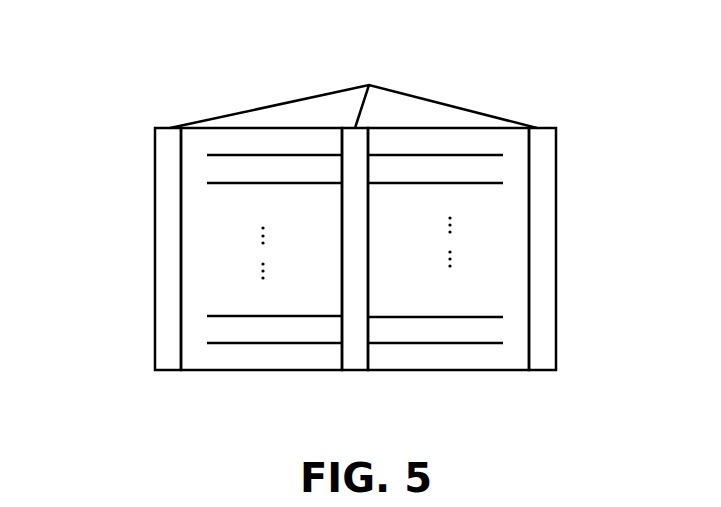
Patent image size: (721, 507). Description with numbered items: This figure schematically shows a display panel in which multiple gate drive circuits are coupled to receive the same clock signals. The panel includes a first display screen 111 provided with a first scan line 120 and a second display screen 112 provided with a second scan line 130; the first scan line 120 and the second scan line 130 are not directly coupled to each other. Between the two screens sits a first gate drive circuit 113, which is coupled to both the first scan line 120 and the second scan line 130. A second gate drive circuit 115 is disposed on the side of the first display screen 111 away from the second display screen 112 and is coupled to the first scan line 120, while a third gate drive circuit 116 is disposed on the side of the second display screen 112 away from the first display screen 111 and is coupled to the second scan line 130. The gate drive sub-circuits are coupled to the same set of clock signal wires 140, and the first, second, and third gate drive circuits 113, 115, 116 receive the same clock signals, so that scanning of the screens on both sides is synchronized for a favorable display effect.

The first display screen 111 is at (183, 249).
The second display screen 112 is at (536, 249).
The first gate drive circuit 113 is at (352, 359).
The second gate drive circuit 115 is at (170, 356).
The third gate drive circuit 116 is at (532, 356).
The first scan line 120 is at (207, 160).
The second scan line 130 is at (512, 160).
The clock signal wires 140 is at (380, 82).